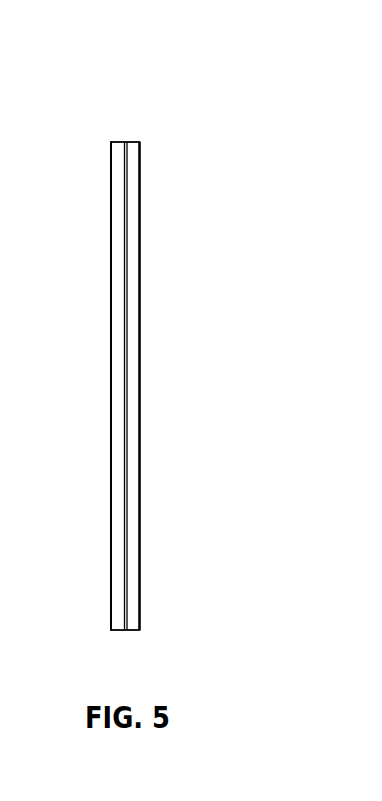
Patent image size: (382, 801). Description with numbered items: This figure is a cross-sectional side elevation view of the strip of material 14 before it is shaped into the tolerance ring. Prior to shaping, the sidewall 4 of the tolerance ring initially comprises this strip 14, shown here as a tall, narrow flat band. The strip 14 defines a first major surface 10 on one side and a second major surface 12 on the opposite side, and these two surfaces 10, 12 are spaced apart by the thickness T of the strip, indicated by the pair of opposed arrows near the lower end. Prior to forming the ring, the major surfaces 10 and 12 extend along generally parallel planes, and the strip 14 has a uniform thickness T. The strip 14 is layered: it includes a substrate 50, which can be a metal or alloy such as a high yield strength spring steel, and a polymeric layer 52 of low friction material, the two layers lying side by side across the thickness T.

The first major surface 10 is at (102, 391).
The second major surface 12 is at (146, 393).
The strip of material 14 is at (232, 65).
The sidewall 4 is at (126, 142).
The substrate 50 is at (122, 142).
The polymeric layer 52 is at (128, 142).
The thickness T is at (82, 584).